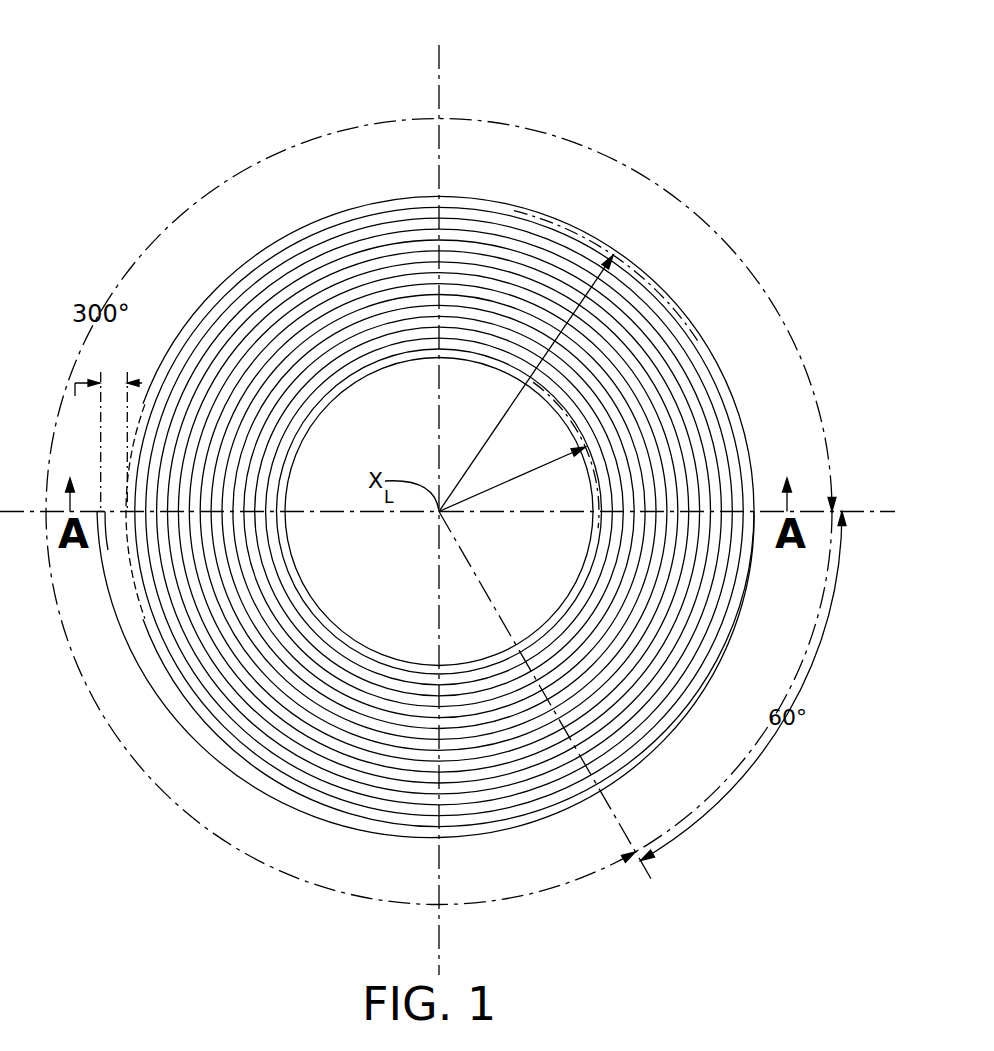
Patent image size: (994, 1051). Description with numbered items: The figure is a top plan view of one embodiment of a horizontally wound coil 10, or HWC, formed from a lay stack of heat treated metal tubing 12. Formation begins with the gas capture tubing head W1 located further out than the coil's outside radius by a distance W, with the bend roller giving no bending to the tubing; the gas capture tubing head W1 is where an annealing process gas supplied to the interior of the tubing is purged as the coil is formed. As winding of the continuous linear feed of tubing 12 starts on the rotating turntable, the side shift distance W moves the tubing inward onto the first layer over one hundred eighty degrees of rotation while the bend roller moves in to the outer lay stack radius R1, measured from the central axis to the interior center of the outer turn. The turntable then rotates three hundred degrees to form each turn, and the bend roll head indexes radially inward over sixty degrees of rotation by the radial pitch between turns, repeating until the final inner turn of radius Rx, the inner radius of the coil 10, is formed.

The horizontally wound coil 10 is at (645, 70).
The tubing 12 is at (196, 738).
The distance W is at (102, 442).
The gas capture tubing head W1 is at (98, 508).
The outer lay stack radius R1 is at (569, 361).
The inner radius Rx is at (519, 455).